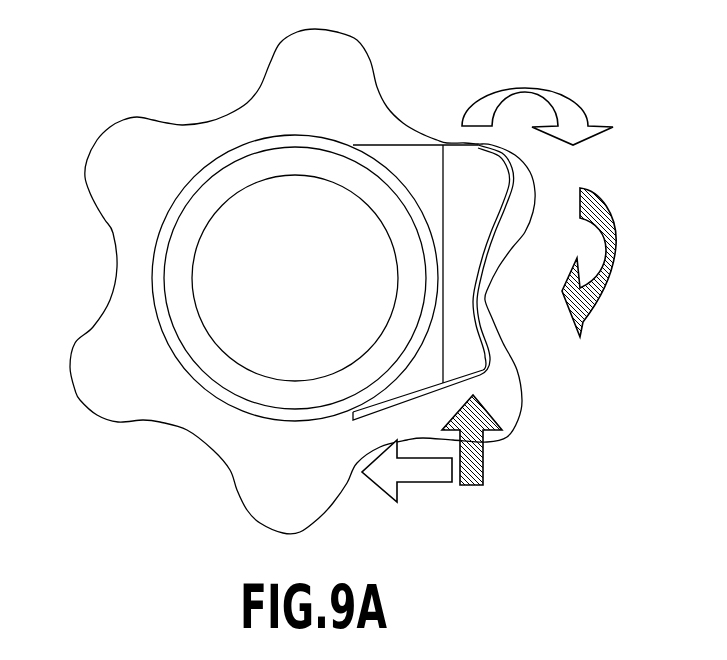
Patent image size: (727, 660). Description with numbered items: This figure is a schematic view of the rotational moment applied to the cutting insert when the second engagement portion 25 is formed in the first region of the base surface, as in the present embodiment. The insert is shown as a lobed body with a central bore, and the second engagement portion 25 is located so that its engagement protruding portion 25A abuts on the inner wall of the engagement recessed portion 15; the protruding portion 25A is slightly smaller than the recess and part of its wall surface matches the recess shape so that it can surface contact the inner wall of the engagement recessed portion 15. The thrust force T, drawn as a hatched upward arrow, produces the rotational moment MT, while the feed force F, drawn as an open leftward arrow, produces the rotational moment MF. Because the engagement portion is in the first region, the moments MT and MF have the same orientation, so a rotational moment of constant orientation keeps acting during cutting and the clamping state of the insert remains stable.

The engagement recessed portion 15 is at (318, 30).
The second engagement portion 25 is at (472, 282).
The engagement protruding portion 25A is at (513, 170).
The rotational moment by feed force MF is at (556, 97).
The rotational moment by thrust force MT is at (598, 312).
The feed force F is at (418, 483).
The thrust force T is at (472, 486).